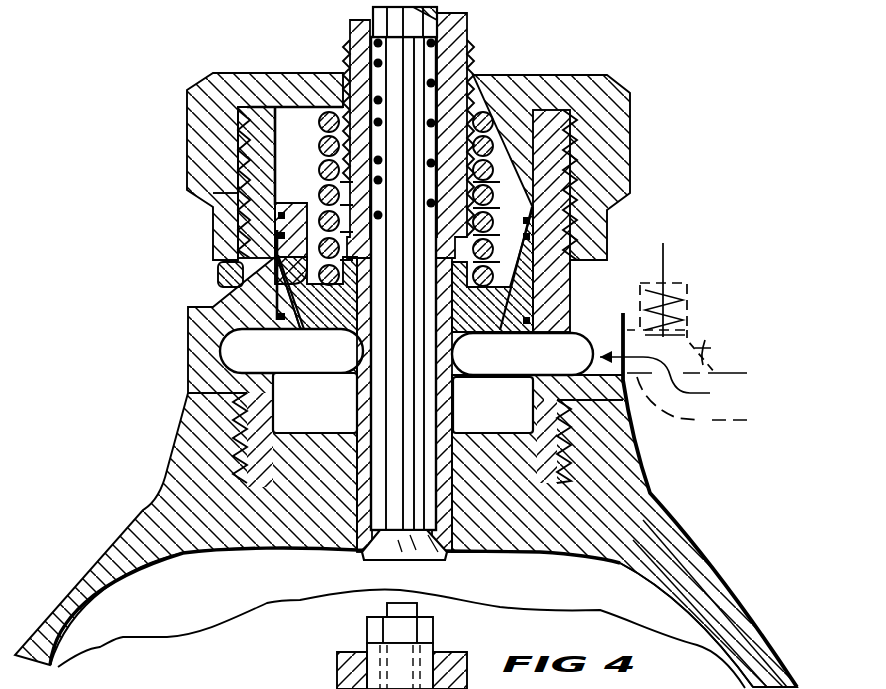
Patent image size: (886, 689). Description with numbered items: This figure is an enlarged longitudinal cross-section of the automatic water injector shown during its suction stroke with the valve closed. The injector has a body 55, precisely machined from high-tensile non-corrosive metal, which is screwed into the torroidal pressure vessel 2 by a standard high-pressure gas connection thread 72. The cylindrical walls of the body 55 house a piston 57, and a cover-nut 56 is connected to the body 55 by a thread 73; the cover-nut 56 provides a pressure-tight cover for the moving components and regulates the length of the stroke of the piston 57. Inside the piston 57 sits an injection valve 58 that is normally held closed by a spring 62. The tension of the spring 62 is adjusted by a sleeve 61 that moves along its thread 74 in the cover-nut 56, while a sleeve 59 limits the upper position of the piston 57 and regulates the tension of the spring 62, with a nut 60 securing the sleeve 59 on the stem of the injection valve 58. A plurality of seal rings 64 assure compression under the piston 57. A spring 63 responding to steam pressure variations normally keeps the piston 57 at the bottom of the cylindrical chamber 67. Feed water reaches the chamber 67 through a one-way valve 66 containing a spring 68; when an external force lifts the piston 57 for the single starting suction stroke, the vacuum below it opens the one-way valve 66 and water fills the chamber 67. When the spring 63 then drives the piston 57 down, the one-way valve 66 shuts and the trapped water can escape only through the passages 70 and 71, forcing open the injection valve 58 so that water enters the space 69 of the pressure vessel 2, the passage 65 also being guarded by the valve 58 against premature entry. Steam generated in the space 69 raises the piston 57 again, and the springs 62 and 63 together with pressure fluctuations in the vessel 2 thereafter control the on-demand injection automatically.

The torroidal pressure vessel 2 is at (658, 537).
The body 55 is at (245, 150).
The cover-nut 56 is at (217, 185).
The piston 57 is at (240, 255).
The injection valve 58 is at (445, 568).
The sleeve 59 is at (346, 37).
The nut 60 is at (445, 625).
The sleeve 61 is at (470, 23).
The spring 62 is at (467, 72).
The spring 63 is at (497, 153).
The seal rings 64 is at (258, 333).
The passage 65 is at (303, 338).
The one-way valve 66 is at (700, 347).
The cylindrical chamber 67 is at (522, 354).
The spring 68 is at (658, 273).
The space 69 is at (555, 600).
The passage 70 is at (460, 380).
The passage 71 is at (377, 443).
The thread 72 is at (233, 473).
The thread 73 is at (233, 272).
The thread 74 is at (350, 65).